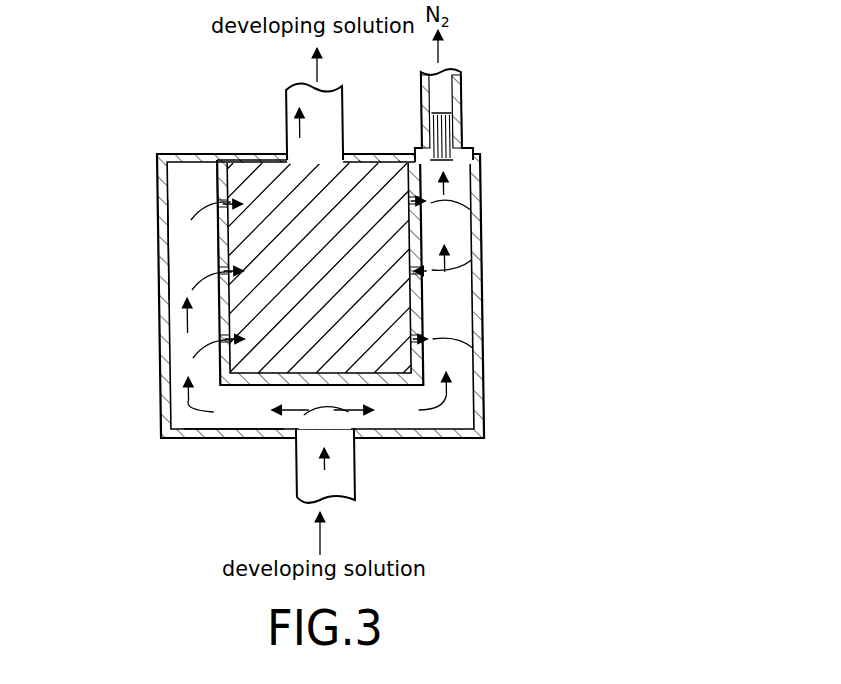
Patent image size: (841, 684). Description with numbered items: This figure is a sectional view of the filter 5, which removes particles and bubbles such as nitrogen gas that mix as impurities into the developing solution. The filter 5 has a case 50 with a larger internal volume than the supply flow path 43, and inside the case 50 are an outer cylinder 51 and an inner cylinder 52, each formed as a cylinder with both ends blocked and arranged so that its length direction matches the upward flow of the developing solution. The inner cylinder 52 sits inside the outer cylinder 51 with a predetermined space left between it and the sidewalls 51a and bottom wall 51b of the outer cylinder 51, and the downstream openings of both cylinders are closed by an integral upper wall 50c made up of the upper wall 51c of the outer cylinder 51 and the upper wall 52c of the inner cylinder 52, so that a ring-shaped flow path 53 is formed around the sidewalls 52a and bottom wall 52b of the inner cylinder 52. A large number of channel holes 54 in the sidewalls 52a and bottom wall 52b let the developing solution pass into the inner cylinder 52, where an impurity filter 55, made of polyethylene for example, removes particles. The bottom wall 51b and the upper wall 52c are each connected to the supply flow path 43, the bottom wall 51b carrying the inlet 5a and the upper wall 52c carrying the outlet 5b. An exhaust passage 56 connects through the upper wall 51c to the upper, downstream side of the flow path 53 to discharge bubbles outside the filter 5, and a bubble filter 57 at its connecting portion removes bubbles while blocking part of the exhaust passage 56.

The filter 5 is at (522, 182).
The inlet 5a is at (370, 438).
The outlet 5b is at (292, 188).
The supply flow path 43 is at (287, 107).
The case 50 is at (547, 297).
The upper wall 50c is at (175, 70).
The outer cylinder 51 is at (162, 353).
The sidewalls 51a is at (160, 232).
The bottom wall 51b is at (190, 440).
The upper wall 51c is at (187, 154).
The inner cylinder 52 is at (422, 347).
The sidewalls 52a is at (217, 178).
The bottom wall 52b is at (262, 386).
The upper wall 52c is at (235, 158).
The flow path 53 is at (478, 418).
The channel holes 54 is at (478, 257).
The impurity filter 55 is at (258, 352).
The exhaust passage 56 is at (460, 76).
The bubble filter 57 is at (455, 122).